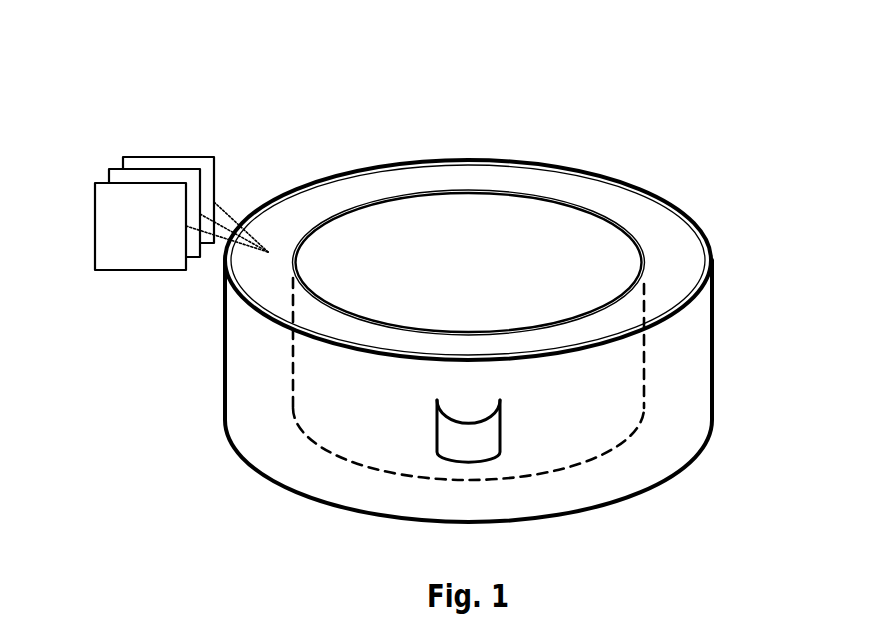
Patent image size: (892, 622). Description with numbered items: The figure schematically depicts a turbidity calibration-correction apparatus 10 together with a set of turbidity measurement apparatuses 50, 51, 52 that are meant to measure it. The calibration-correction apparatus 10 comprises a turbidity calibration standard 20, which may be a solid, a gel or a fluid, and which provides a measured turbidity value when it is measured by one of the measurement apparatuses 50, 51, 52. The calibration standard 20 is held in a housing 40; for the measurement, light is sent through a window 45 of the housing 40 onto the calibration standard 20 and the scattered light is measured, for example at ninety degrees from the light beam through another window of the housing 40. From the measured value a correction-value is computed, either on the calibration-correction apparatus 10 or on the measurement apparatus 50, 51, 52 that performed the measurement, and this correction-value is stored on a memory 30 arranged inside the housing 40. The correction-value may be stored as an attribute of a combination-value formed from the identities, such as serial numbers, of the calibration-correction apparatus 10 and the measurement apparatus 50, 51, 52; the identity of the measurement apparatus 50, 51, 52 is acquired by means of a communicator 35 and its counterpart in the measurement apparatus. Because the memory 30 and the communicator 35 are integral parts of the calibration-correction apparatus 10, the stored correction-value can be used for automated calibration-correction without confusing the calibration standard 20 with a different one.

The turbidity calibration-correction apparatus 10 is at (302, 77).
The turbidity calibration standard 20 is at (520, 248).
The memory 30 is at (456, 178).
The communicator 35 is at (345, 192).
The housing 40 is at (672, 393).
The window 45 is at (468, 438).
The turbidity measurement apparatus 50 is at (157, 239).
The turbidity measurement apparatus 51 is at (141, 169).
The turbidity measurement apparatus 52 is at (187, 157).